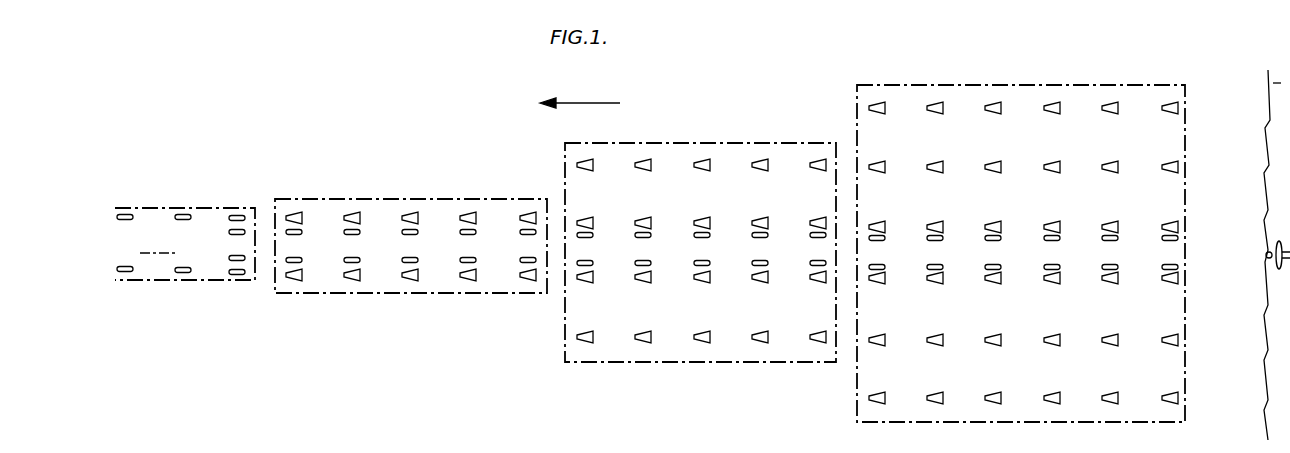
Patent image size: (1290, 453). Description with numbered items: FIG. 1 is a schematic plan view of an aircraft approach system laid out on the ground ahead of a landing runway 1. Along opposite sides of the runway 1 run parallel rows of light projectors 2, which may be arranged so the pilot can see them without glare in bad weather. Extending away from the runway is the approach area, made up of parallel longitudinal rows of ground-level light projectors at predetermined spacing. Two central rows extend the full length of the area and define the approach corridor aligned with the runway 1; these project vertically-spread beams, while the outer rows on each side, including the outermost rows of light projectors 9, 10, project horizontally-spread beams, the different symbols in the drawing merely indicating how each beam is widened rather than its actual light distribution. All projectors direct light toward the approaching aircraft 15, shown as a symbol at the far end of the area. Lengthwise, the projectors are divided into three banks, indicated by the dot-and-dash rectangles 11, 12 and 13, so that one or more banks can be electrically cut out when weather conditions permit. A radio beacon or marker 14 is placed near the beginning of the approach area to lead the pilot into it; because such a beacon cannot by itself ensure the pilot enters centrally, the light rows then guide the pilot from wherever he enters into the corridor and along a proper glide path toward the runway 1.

The landing runway 1 is at (185, 246).
The light projectors 2 is at (183, 213).
The outer row of light projectors 9 is at (928, 110).
The outer row of light projectors 10 is at (985, 397).
The bank of light projectors 11 is at (370, 198).
The bank of light projectors 12 is at (662, 141).
The bank of light projectors 13 is at (1030, 85).
The radio beacon 14 is at (1266, 255).
The aircraft 15 is at (1270, 263).